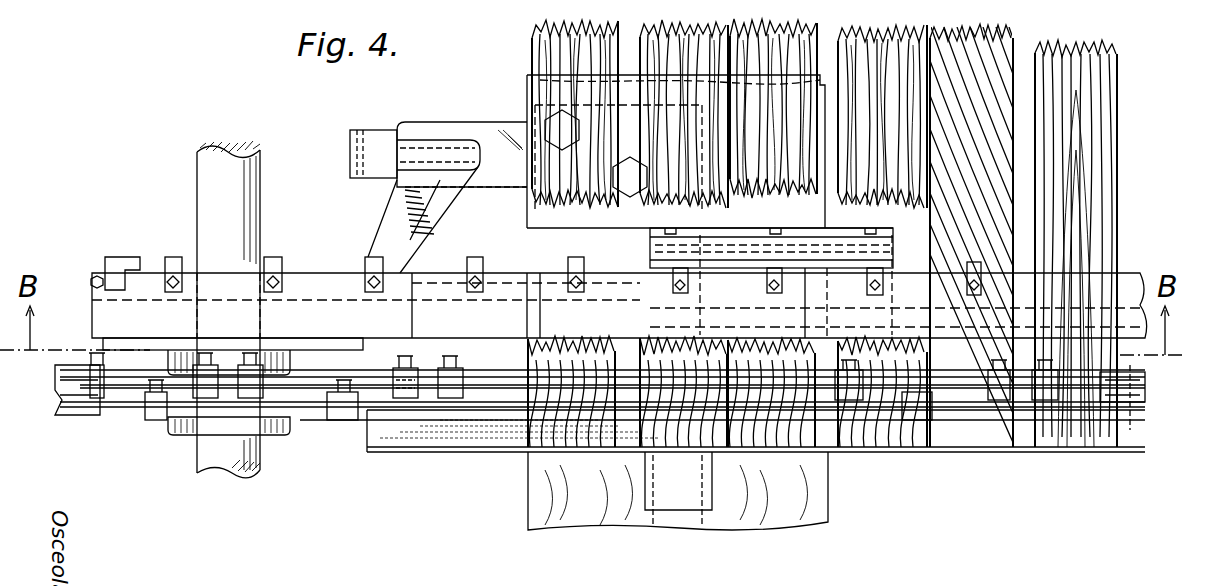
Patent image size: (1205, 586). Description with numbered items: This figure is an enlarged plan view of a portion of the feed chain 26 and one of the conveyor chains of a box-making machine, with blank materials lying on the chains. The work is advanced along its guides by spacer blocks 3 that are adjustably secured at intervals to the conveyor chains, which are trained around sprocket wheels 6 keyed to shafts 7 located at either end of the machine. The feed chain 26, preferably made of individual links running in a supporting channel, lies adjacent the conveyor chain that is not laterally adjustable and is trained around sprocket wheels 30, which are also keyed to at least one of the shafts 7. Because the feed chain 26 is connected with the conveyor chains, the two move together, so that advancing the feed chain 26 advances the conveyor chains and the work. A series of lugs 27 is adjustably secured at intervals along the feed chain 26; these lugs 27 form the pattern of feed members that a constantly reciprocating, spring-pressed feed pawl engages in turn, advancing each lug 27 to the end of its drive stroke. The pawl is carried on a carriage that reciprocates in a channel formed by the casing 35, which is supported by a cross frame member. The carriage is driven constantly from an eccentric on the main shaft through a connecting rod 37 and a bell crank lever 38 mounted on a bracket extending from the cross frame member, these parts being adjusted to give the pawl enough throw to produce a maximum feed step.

The spacer block 3 is at (406, 377).
The sprocket wheel 6 is at (188, 420).
The shaft 7 is at (205, 190).
The feed chain 26 is at (495, 328).
The lug 27 is at (477, 268).
The sprocket wheel 30 is at (306, 340).
The casing 35 is at (660, 240).
The connecting rod 37 is at (440, 290).
The bell crank lever 38 is at (392, 229).